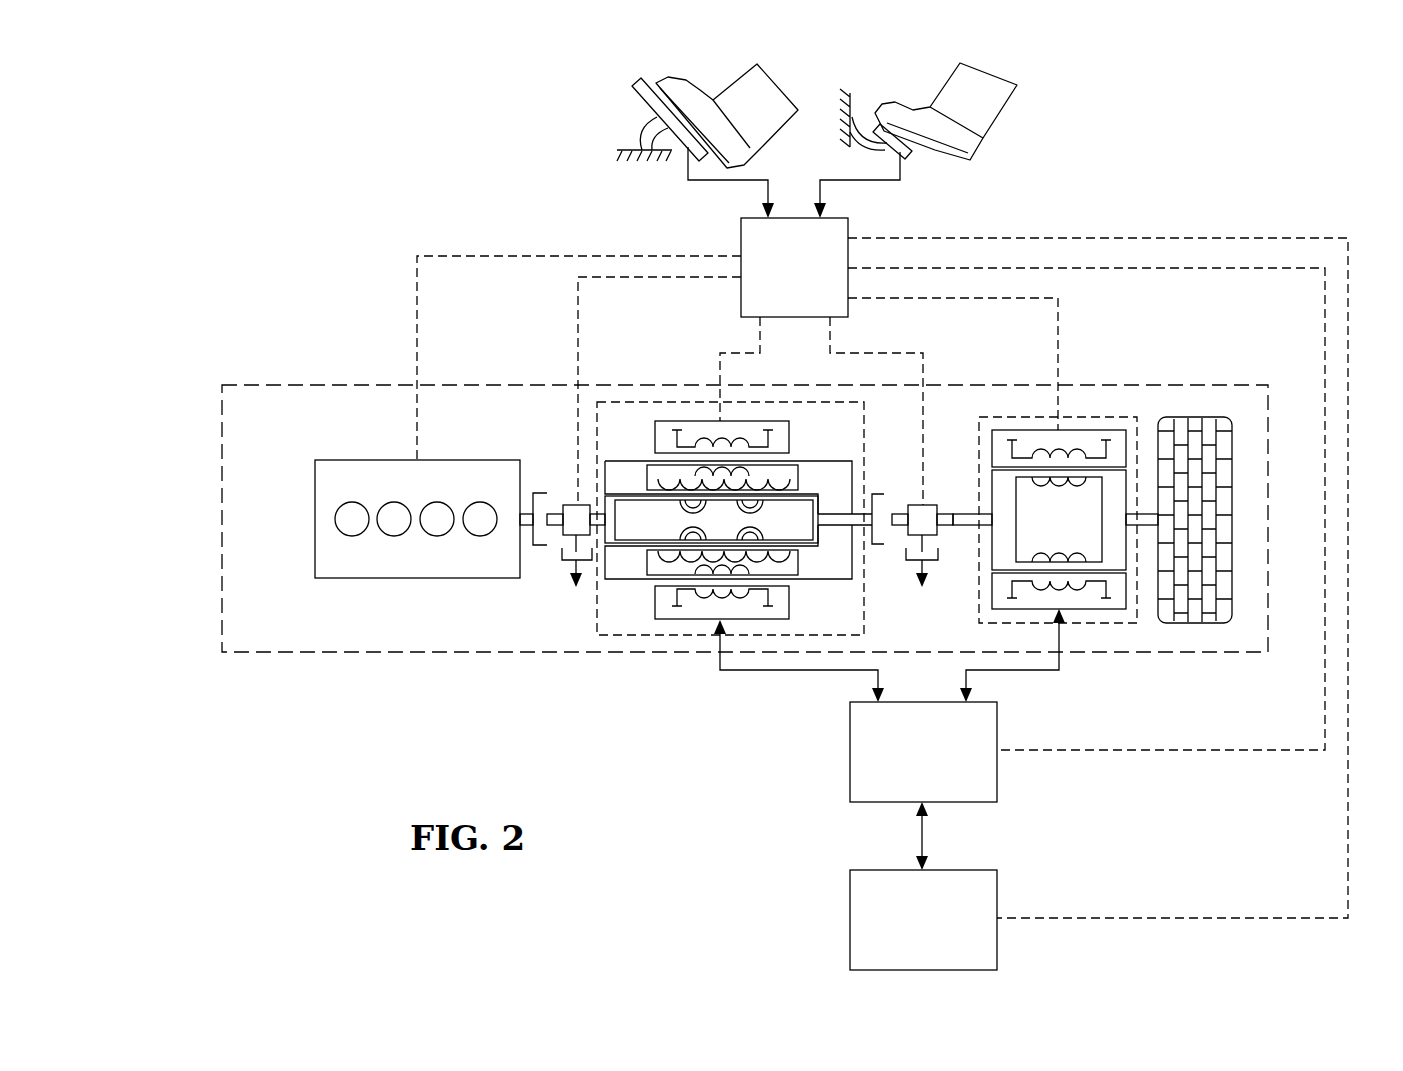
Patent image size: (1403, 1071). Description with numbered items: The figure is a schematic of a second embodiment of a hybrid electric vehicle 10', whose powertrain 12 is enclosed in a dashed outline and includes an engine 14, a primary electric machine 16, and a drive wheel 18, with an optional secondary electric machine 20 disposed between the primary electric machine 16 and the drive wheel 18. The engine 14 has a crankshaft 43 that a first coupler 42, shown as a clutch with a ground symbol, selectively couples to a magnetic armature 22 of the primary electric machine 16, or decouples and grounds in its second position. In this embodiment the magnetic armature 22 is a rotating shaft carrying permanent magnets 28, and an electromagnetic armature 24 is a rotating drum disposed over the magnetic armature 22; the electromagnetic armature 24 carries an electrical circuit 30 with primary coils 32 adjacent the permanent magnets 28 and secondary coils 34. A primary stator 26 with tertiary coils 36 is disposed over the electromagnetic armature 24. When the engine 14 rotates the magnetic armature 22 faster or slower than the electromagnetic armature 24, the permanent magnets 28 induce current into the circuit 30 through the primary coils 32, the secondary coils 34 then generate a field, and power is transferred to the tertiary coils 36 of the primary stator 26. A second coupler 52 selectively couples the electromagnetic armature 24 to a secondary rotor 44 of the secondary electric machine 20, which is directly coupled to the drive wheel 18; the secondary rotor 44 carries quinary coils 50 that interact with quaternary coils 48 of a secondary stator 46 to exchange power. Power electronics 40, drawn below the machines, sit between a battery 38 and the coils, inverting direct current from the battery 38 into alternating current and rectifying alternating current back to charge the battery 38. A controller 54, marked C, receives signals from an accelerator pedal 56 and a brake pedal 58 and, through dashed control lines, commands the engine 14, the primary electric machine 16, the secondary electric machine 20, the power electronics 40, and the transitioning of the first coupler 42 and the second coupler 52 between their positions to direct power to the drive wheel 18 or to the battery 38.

The hybrid electric vehicle 10' is at (780, 513).
The powertrain 12 is at (275, 385).
The engine 14 is at (368, 460).
The primary electric machine 16 is at (698, 402).
The drive wheel 18 is at (1200, 417).
The secondary electric machine 20 is at (1032, 417).
The magnetic armature 22 is at (598, 500).
The electromagnetic armature 24 is at (618, 590).
The primary stator 26 is at (757, 628).
The permanent magnets 28 is at (686, 506).
The electrical circuit 30 is at (626, 478).
The primary coils 32 is at (682, 474).
The secondary coils 34 is at (746, 470).
The tertiary coils 36 is at (728, 445).
The battery 38 is at (997, 893).
The power electronics 40 is at (997, 725).
The first coupler 42 is at (552, 485).
The crankshaft 43 is at (528, 525).
The secondary rotor 44 is at (985, 550).
The secondary stator 46 is at (1075, 618).
The quaternary coils 48 is at (1060, 445).
The quinary coils 50 is at (1078, 556).
The second coupler 52 is at (910, 488).
The controller 54 is at (741, 240).
The accelerator pedal 56 is at (640, 115).
The brake pedal 58 is at (905, 158).